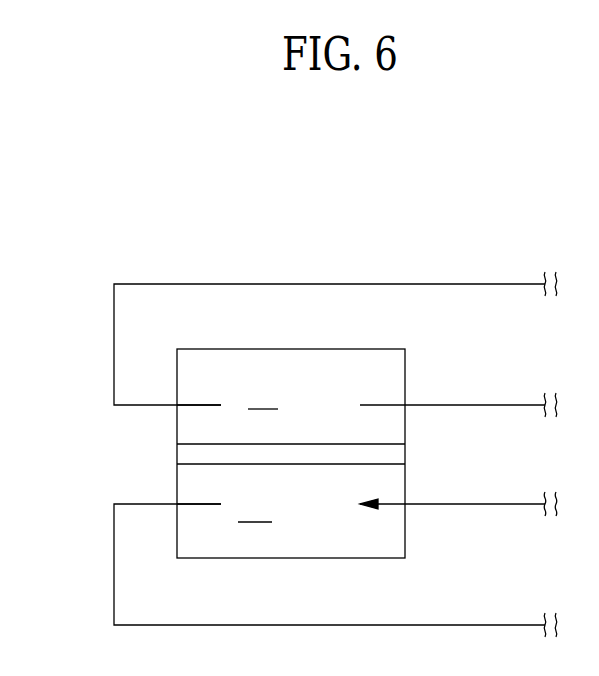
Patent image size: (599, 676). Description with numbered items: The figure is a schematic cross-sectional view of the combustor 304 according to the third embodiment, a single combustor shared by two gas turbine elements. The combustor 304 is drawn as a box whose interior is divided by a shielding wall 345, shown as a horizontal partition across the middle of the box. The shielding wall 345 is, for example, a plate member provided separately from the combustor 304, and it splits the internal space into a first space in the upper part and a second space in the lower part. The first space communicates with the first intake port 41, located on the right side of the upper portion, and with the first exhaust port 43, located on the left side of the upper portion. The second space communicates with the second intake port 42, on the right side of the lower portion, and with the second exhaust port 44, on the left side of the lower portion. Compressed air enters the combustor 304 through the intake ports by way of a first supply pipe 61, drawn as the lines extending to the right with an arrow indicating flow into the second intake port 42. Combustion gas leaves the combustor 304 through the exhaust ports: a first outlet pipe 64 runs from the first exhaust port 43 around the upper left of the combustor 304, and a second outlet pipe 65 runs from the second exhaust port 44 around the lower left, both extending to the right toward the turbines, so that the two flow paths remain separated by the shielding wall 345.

The combustor 304 is at (372, 349).
The shielding wall 345 is at (297, 465).
The first intake port 41 is at (405, 404).
The second intake port 42 is at (405, 503).
The first exhaust port 43 is at (177, 404).
The second exhaust port 44 is at (177, 503).
The first supply pipe 61 is at (442, 404).
The first outlet pipe 64 is at (114, 350).
The second outlet pipe 65 is at (114, 575).